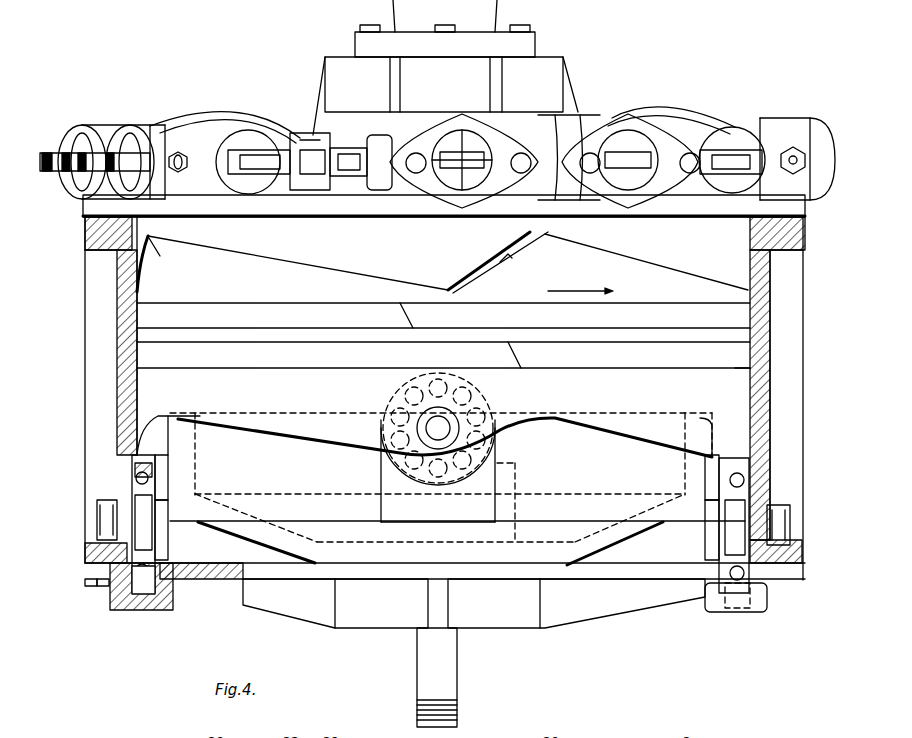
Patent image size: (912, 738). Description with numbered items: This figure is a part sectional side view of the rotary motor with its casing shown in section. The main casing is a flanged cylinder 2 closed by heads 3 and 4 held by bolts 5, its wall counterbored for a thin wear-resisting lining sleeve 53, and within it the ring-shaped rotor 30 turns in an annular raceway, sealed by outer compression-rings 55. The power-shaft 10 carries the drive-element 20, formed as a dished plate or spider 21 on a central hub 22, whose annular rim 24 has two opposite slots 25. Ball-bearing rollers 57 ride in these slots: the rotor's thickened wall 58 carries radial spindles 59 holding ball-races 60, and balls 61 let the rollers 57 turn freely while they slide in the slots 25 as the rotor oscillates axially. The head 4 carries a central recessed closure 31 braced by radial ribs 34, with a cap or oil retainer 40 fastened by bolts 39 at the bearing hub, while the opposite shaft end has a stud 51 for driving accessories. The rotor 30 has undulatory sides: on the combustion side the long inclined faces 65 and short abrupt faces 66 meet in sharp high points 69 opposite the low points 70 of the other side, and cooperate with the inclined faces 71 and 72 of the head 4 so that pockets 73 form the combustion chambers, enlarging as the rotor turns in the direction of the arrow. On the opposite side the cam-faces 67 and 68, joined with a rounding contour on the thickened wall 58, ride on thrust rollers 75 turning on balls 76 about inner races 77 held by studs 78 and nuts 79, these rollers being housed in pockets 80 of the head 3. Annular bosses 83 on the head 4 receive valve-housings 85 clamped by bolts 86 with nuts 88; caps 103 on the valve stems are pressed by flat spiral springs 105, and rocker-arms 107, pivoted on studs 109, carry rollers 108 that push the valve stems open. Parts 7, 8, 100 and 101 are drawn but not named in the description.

The flanged cylinder 2 is at (772, 350).
The head 3 is at (228, 578).
The head 4 is at (444, 206).
The bolts 5 is at (90, 586).
The central base block 7 is at (494, 603).
The base plate portion 8 is at (268, 612).
The power-shaft 10 is at (445, 16).
The drive-element 20 is at (232, 540).
The dished plate or spider 21 is at (630, 538).
The central hub 22 is at (515, 480).
The annular rim 24 is at (222, 412).
The slots or openings 25 is at (382, 478).
The rotor 30 is at (347, 380).
The central recessed member or closure 31 is at (444, 84).
The radial ribs 34 is at (502, 72).
The bolts 39 is at (522, 25).
The cap or oil retainer 40 is at (445, 41).
The stud 51 is at (437, 677).
The lining sleeve 53 is at (750, 385).
The outer compression-rings 55 is at (443, 335).
The ball-bearing rollers 57 is at (480, 405).
The thickened wall 58 is at (170, 450).
The hollow studs or spindles 59 is at (418, 420).
The ball-races 60 is at (495, 420).
The balls 61 is at (468, 392).
The long inclined faces 65 is at (268, 256).
The short abrupt faces 66 is at (331, 264).
The long cam-faces 67 is at (270, 430).
The short cam-faces 68 is at (185, 437).
The high points 69 is at (548, 247).
The low points 70 is at (498, 265).
The inclined faces 71 is at (360, 273).
The inclined faces 72 is at (150, 232).
The pockets or openings 73 is at (545, 226).
The rollers 75 is at (445, 477).
The balls 76 is at (136, 478).
The inner annular races 77 is at (172, 488).
The studs 78 is at (722, 555).
The nuts 79 is at (97, 505).
The pockets 80 is at (140, 608).
The annular bosses 83 is at (180, 118).
The valve-housings 85 is at (176, 138).
The bolts 86 is at (795, 150).
The nuts 88 is at (180, 152).
The roller 100 is at (112, 135).
The pin shaft 101 is at (52, 152).
The circular disks or caps 103 is at (250, 132).
The flat spiral springs 105 is at (378, 188).
The rocker-arms 107 is at (262, 185).
The rollers 108 is at (235, 165).
The studs 109 is at (332, 140).